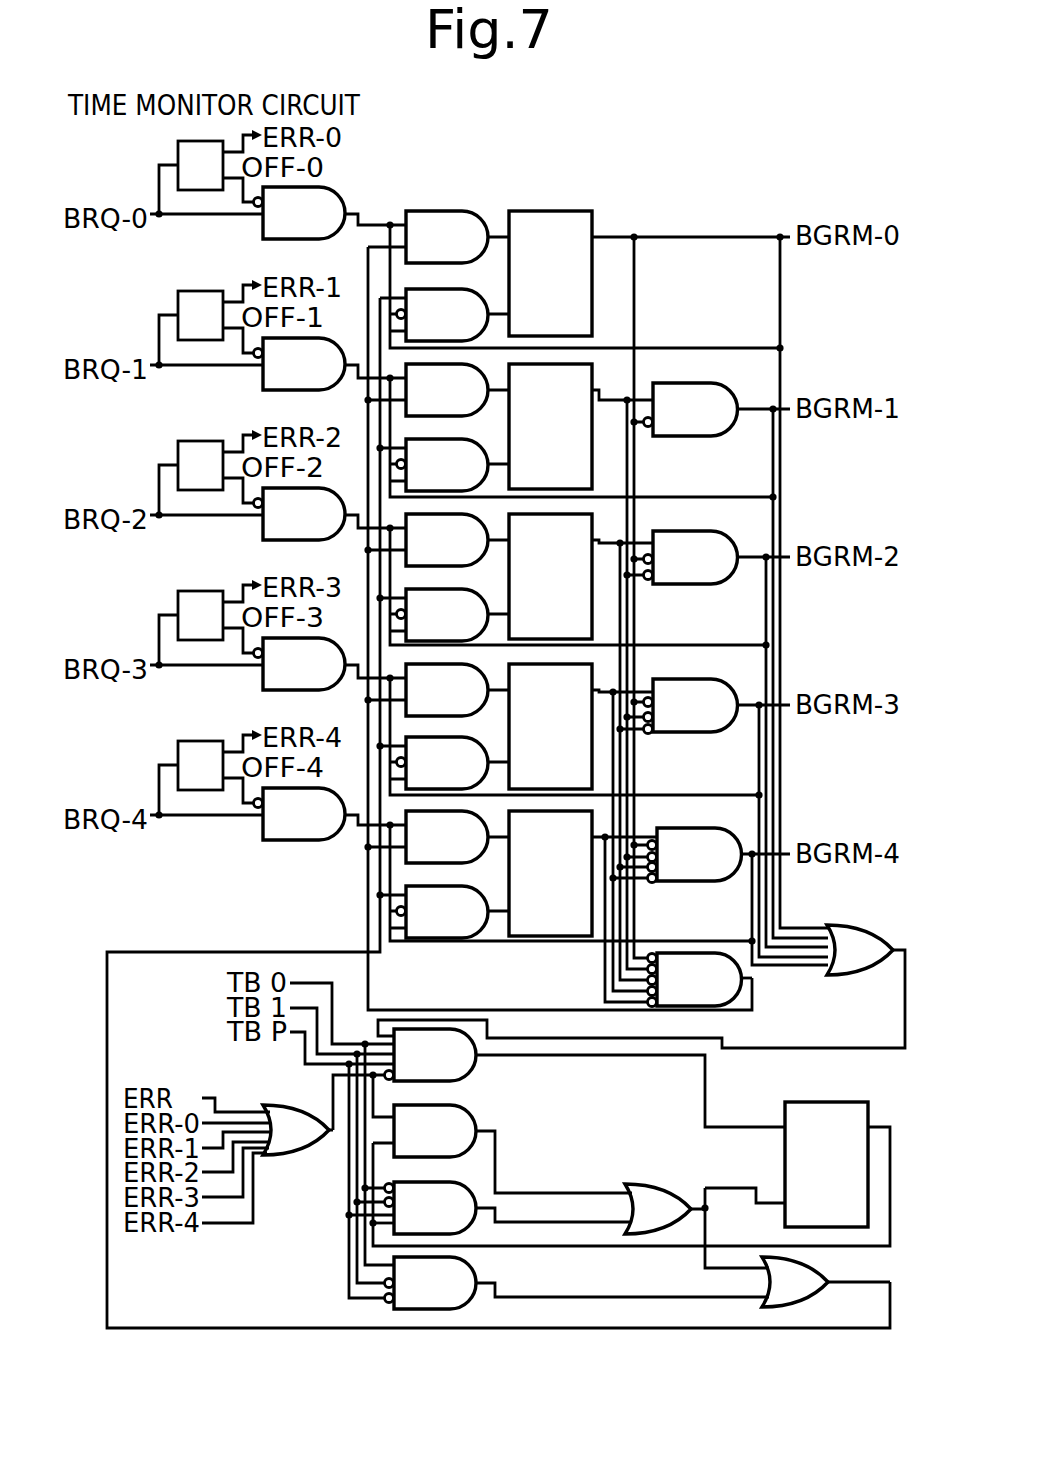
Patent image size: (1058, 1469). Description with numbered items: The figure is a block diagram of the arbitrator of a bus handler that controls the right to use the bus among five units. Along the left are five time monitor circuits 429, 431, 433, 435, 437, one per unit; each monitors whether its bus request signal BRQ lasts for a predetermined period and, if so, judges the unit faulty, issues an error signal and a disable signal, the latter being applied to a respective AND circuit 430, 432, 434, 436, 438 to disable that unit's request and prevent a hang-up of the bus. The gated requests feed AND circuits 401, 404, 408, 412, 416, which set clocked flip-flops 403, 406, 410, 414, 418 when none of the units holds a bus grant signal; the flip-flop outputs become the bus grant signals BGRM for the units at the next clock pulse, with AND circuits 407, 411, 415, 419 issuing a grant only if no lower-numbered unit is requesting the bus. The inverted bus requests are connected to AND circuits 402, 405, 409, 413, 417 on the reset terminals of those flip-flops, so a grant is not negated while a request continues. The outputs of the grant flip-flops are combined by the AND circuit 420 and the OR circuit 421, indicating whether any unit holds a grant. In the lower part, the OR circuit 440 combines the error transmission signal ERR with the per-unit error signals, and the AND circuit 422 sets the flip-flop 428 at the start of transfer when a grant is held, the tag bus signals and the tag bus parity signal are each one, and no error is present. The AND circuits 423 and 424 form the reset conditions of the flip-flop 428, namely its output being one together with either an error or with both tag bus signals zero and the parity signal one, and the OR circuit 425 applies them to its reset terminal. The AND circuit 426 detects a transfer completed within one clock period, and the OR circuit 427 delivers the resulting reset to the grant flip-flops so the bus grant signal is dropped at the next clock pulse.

The AND circuit 401 is at (438, 237).
The AND circuit 402 is at (580, 286).
The flip-flop 403 is at (649, 273).
The AND circuit 404 is at (438, 390).
The AND circuit 405 is at (574, 437).
The flip-flop 406 is at (581, 426).
The AND circuit 407 is at (710, 409).
The AND circuit 408 is at (438, 540).
The AND circuit 409 is at (571, 586).
The flip-flop 410 is at (581, 576).
The AND circuit 411 is at (706, 557).
The AND circuit 412 is at (438, 690).
The AND circuit 413 is at (567, 736).
The flip-flop 414 is at (581, 726).
The AND circuit 415 is at (703, 706).
The AND circuit 416 is at (438, 837).
The AND circuit 417 is at (564, 883).
The flip-flop 418 is at (583, 873).
The AND circuit 419 is at (699, 855).
The AND circuit 420 is at (700, 980).
The OR circuit 421 is at (853, 975).
The AND circuit 422 is at (559, 1079).
The AND circuit 423 is at (513, 1149).
The AND circuit 424 is at (509, 1208).
The OR circuit 425 is at (641, 1186).
The AND circuit 426 is at (577, 1283).
The OR circuit 427 is at (815, 1297).
The flip-flop 428 is at (826, 1164).
The time monitor circuit 429 is at (178, 148).
The AND circuit 430 is at (330, 213).
The time monitor circuit 431 is at (178, 298).
The AND circuit 432 is at (330, 364).
The time monitor circuit 433 is at (178, 448).
The AND circuit 434 is at (330, 514).
The time monitor circuit 435 is at (178, 598).
The AND circuit 436 is at (330, 664).
The time monitor circuit 437 is at (178, 748).
The AND circuit 438 is at (330, 814).
The OR circuit 440 is at (300, 1155).